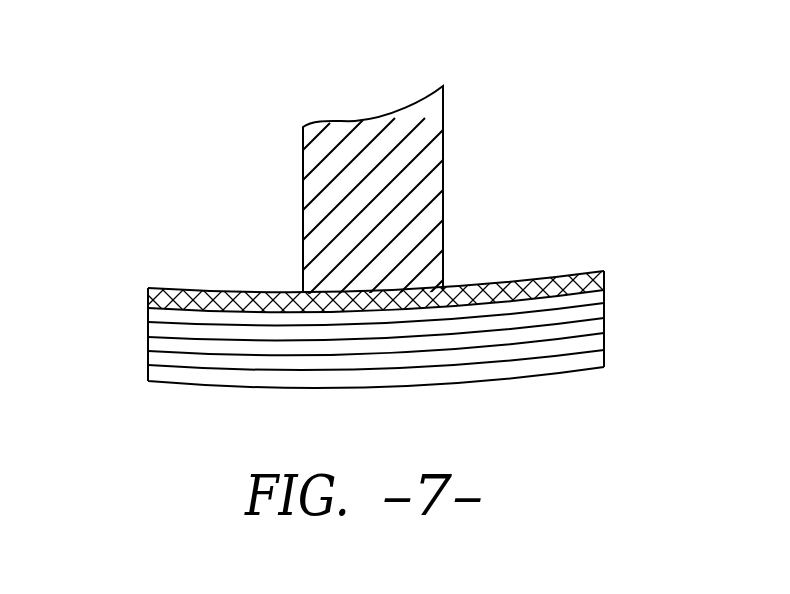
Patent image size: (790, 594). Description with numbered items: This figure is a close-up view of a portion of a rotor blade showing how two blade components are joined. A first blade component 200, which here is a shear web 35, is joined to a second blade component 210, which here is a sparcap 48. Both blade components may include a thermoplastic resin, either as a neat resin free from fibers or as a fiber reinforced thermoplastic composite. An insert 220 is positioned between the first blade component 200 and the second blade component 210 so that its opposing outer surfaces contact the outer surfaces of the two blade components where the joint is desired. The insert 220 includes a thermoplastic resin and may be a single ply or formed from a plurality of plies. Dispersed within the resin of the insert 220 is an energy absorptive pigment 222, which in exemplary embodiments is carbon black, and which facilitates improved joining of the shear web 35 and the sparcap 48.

The first blade component 200 is at (283, 150).
The shear web 35 is at (326, 238).
The second blade component 210 is at (128, 327).
The sparcap 48 is at (207, 364).
The insert 220 is at (486, 281).
The energy absorptive pigment 222 is at (549, 276).